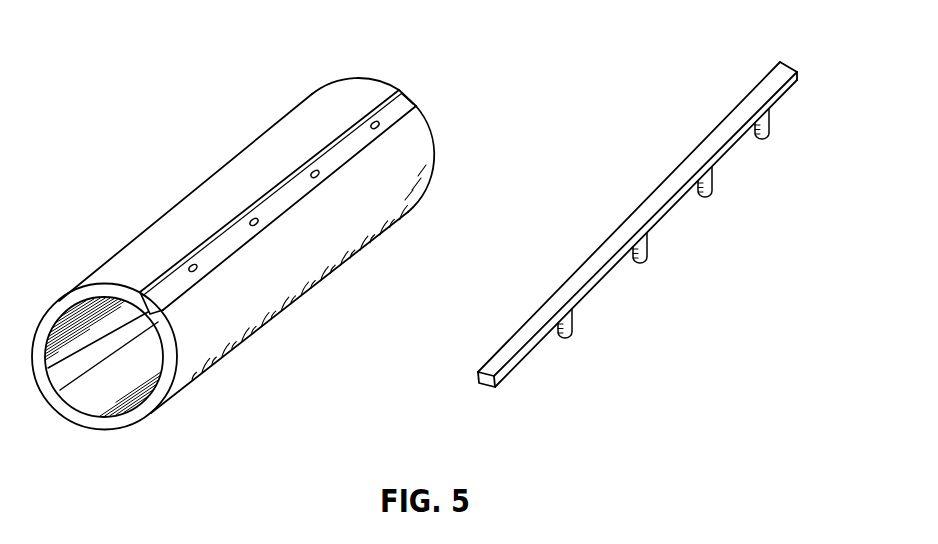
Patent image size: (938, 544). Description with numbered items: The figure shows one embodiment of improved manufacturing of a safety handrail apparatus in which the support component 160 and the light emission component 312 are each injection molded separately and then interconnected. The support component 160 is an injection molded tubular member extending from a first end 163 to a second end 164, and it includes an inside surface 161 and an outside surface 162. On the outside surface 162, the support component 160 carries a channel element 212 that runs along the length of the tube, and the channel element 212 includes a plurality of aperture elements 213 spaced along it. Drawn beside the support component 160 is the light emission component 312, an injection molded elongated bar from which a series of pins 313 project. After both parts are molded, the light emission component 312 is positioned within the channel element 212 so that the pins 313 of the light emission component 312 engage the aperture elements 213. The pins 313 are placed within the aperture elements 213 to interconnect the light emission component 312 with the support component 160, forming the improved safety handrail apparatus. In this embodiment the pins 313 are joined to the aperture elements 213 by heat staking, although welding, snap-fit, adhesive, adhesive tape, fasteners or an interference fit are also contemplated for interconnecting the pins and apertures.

The support component 160 is at (276, 253).
The inside surface 161 is at (93, 392).
The outside surface 162 is at (258, 152).
The first end 163 is at (137, 412).
The second end 164 is at (390, 85).
The channel element 212 is at (402, 105).
The aperture elements 213 is at (257, 224).
The light emission component 312 is at (683, 212).
The pins 313 is at (708, 195).